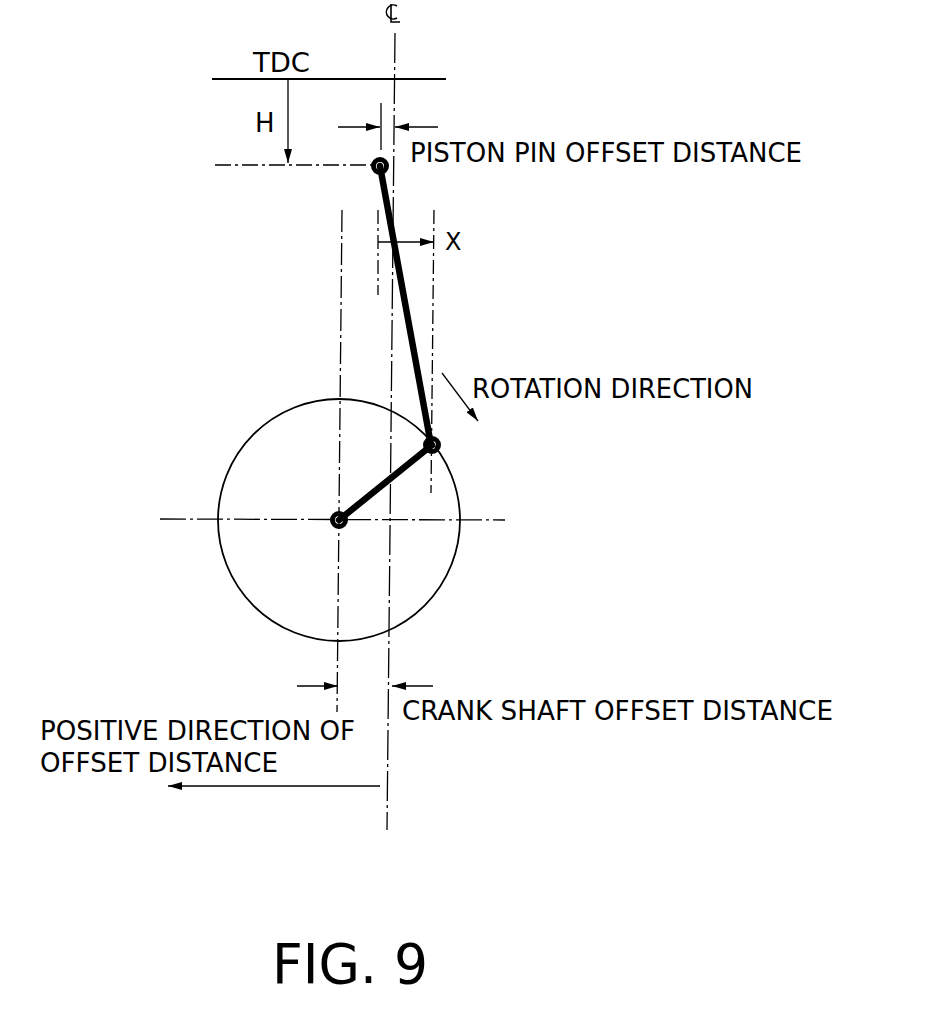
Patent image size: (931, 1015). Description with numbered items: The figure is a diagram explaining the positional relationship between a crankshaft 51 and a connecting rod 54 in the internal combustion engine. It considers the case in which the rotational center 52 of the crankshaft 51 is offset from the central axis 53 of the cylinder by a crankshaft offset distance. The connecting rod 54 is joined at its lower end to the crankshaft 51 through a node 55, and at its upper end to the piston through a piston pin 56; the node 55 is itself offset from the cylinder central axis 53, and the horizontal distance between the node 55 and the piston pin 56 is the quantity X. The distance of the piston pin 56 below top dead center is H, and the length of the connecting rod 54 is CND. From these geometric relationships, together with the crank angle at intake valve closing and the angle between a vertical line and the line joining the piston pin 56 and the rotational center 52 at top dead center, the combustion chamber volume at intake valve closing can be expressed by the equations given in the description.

The crankshaft 51 is at (402, 473).
The rotational center 52 is at (331, 514).
The central axis 53 is at (388, 742).
The connecting rod 54 is at (412, 313).
The node 55 is at (443, 442).
The piston pin 56 is at (370, 159).